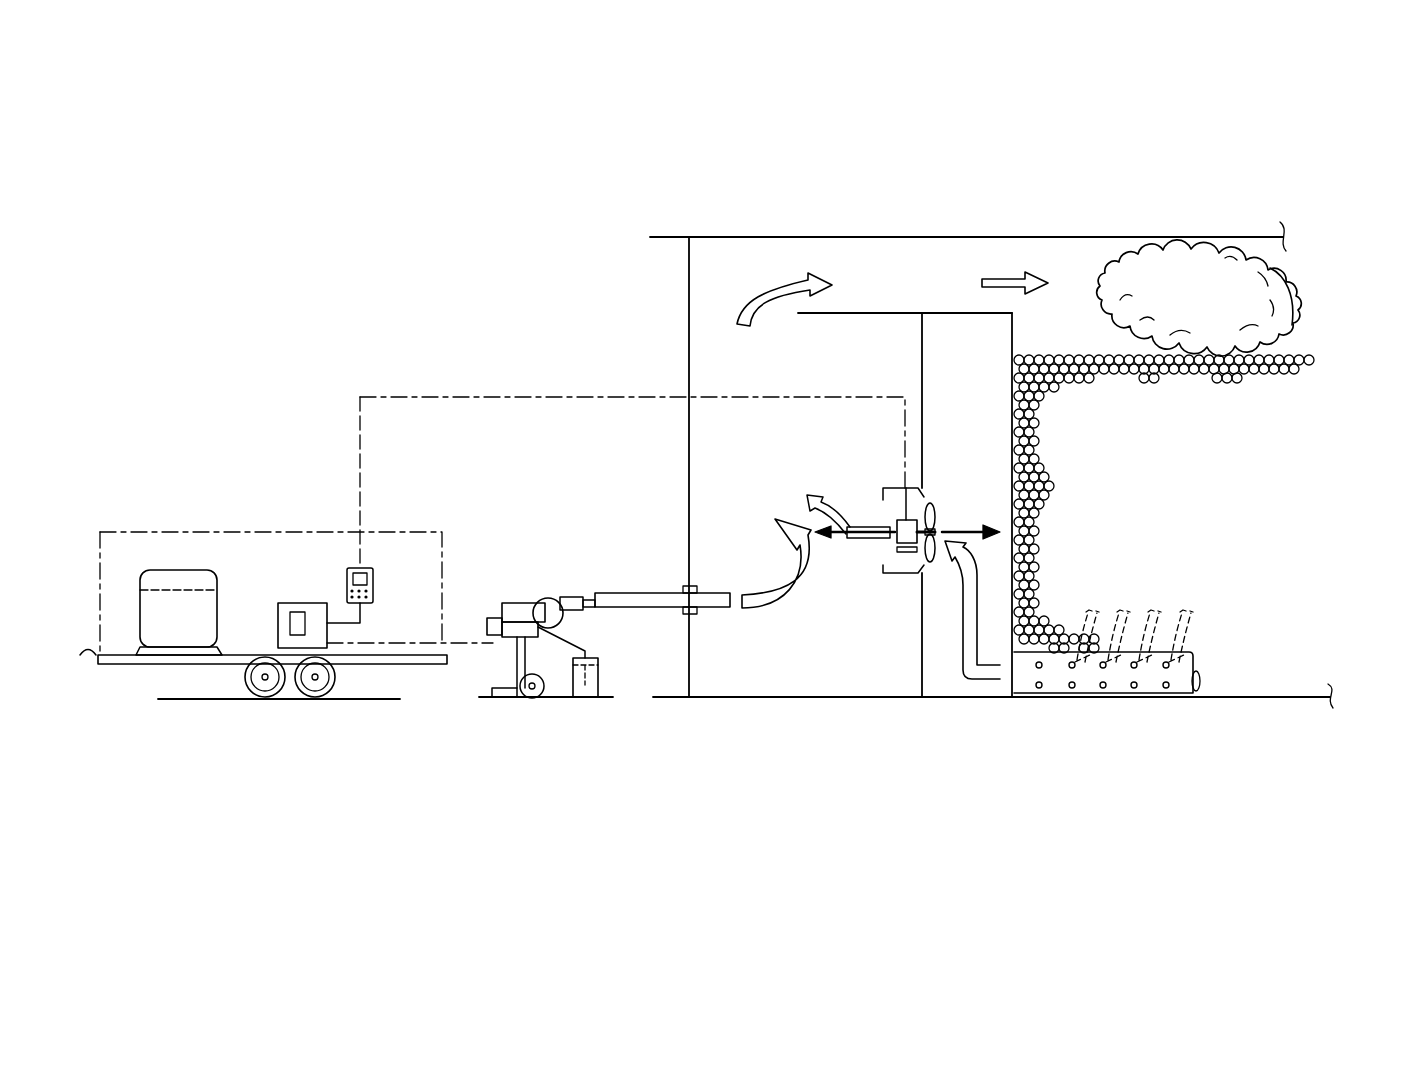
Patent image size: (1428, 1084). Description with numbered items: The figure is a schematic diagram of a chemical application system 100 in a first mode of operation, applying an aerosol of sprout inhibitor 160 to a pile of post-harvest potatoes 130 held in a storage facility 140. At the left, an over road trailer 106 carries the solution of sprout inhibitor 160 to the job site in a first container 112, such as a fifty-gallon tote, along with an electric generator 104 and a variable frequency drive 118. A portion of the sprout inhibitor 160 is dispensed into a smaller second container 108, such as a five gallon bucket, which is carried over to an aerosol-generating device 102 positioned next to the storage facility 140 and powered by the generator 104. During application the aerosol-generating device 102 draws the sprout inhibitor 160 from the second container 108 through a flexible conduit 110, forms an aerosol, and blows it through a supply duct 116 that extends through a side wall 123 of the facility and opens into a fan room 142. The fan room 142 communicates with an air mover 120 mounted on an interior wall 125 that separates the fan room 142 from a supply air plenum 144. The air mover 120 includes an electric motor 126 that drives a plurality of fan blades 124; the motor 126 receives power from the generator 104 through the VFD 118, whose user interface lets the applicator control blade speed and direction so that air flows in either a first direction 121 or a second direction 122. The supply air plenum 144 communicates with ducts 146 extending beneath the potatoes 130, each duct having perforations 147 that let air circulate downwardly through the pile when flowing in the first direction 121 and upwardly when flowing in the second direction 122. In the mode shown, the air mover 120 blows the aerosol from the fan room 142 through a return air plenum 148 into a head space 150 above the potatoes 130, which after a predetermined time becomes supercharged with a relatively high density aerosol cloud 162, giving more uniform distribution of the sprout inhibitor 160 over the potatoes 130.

The chemical application system 100 is at (545, 337).
The aerosol-generating device 102 is at (515, 603).
The electric generator 104 is at (288, 603).
The over road trailer 106 is at (98, 664).
The second container 108 is at (598, 680).
The flexible conduit 110 is at (570, 633).
The first container 112 is at (170, 570).
The supply duct 116 is at (650, 593).
The variable frequency drive 118 is at (373, 585).
The air mover 120 is at (897, 573).
The first direction 121 is at (862, 540).
The second direction 122 is at (972, 523).
The side wall 123 is at (689, 313).
The fan blades 124 is at (935, 520).
The interior wall 125 is at (922, 348).
The electric motor 126 is at (882, 500).
The pile of post-harvest potatoes 130 is at (1310, 360).
The storage facility 140 is at (1145, 236).
The fan room 142 is at (842, 376).
The supply air plenum 144 is at (980, 376).
The ducts 146 is at (1165, 652).
The perforations 147 is at (1072, 688).
The return air plenum 148 is at (917, 287).
The head space 150 is at (1080, 331).
The sprout inhibitor 160 is at (140, 578).
The aerosol cloud 162 is at (1295, 283).